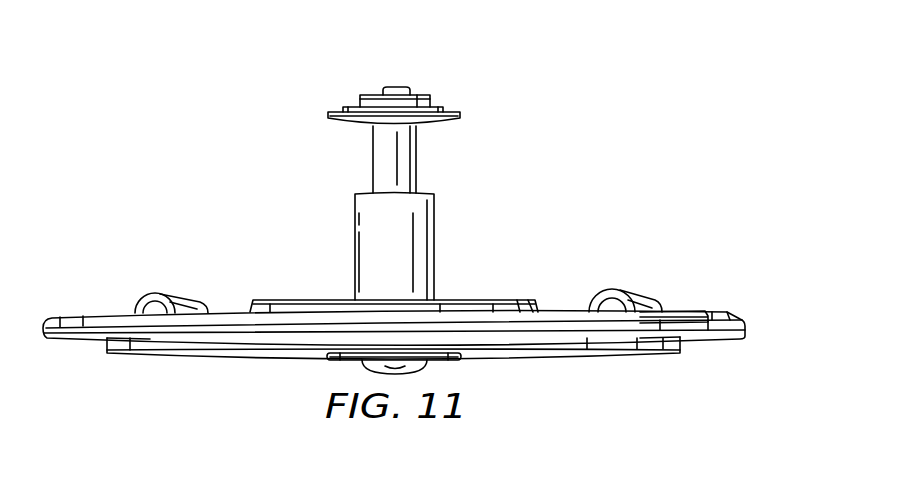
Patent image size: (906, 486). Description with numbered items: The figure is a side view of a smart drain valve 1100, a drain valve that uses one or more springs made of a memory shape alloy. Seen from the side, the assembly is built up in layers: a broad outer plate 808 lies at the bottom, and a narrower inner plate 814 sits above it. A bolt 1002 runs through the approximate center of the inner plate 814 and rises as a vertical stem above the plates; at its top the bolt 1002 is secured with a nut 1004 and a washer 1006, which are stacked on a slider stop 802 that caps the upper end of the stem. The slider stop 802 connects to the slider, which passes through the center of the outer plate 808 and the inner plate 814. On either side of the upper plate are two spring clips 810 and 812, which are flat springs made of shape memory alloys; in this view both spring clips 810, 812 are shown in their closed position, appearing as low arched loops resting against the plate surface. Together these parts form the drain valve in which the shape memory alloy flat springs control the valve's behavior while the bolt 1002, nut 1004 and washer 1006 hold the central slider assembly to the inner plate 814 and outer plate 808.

The smart drain valve 1100 is at (394, 217).
The bolt 1002 is at (392, 86).
The nut 1004 is at (420, 93).
The washer 1006 is at (350, 106).
The slider stop 802 is at (340, 108).
The outer plate 808 is at (270, 355).
The spring clip 810 is at (183, 295).
The spring clip 812 is at (638, 288).
The inner plate 814 is at (478, 297).